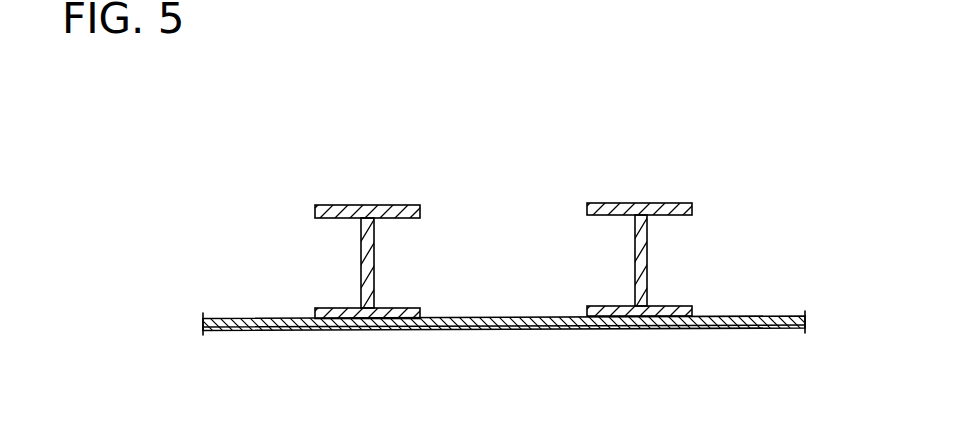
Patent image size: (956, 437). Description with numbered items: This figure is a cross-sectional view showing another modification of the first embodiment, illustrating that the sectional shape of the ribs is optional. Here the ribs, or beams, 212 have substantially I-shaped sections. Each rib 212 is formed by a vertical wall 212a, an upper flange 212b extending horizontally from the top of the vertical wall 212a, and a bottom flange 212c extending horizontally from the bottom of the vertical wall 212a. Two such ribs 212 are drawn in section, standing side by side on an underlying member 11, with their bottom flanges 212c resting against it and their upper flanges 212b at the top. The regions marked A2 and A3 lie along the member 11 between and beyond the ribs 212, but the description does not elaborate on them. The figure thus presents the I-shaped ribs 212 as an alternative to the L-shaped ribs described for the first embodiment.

The plate 11 is at (257, 323).
The rib 212 is at (467, 261).
The vertical wall 212a is at (368, 262).
The upper flange 212b is at (330, 205).
The bottom flange 212c is at (343, 312).
The region A2 is at (475, 318).
The region A3 is at (760, 316).